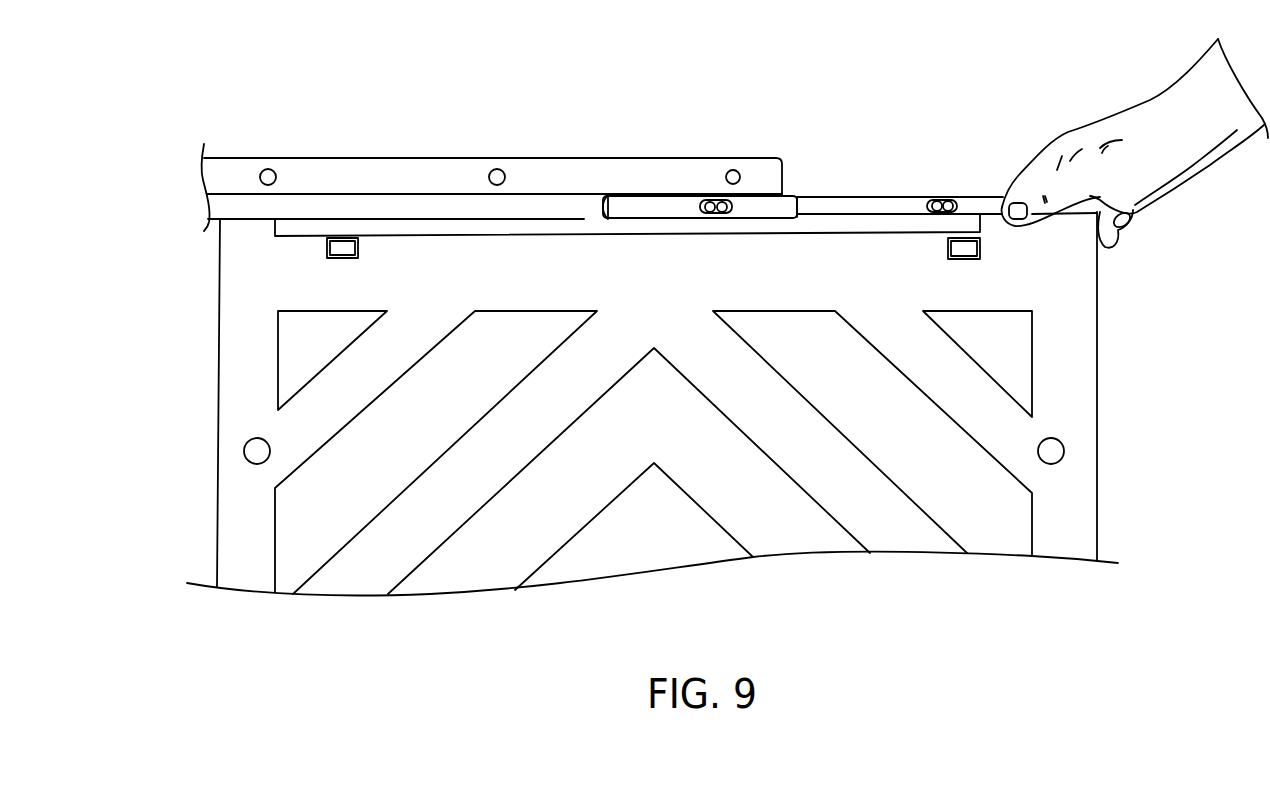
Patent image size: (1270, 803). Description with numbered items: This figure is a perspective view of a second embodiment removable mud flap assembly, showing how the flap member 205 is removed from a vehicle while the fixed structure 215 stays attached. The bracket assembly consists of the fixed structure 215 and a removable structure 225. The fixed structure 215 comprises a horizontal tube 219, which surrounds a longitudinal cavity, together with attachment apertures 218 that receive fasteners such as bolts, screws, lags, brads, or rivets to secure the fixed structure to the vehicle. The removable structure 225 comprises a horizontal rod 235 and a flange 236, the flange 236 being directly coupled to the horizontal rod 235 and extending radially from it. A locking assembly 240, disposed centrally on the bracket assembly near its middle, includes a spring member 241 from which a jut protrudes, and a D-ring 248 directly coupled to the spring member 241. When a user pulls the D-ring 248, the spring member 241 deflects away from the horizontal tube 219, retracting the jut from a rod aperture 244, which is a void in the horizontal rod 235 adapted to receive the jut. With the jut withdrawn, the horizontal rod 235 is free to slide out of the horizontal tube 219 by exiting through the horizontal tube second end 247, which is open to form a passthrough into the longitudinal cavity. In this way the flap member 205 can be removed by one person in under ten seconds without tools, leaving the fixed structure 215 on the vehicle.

The flap member 205 is at (1098, 368).
The fixed structure 215 is at (779, 158).
The attachment apertures 218 is at (267, 169).
The horizontal tube 219 is at (217, 222).
The removable structure 225 is at (810, 196).
The horizontal rod 235 is at (898, 197).
The flange 236 is at (875, 236).
The locking assembly 240 is at (810, 196).
The spring member 241 is at (677, 206).
The rod aperture 244 is at (944, 200).
The horizontal tube second end 247 is at (795, 196).
The D-ring 248 is at (598, 191).